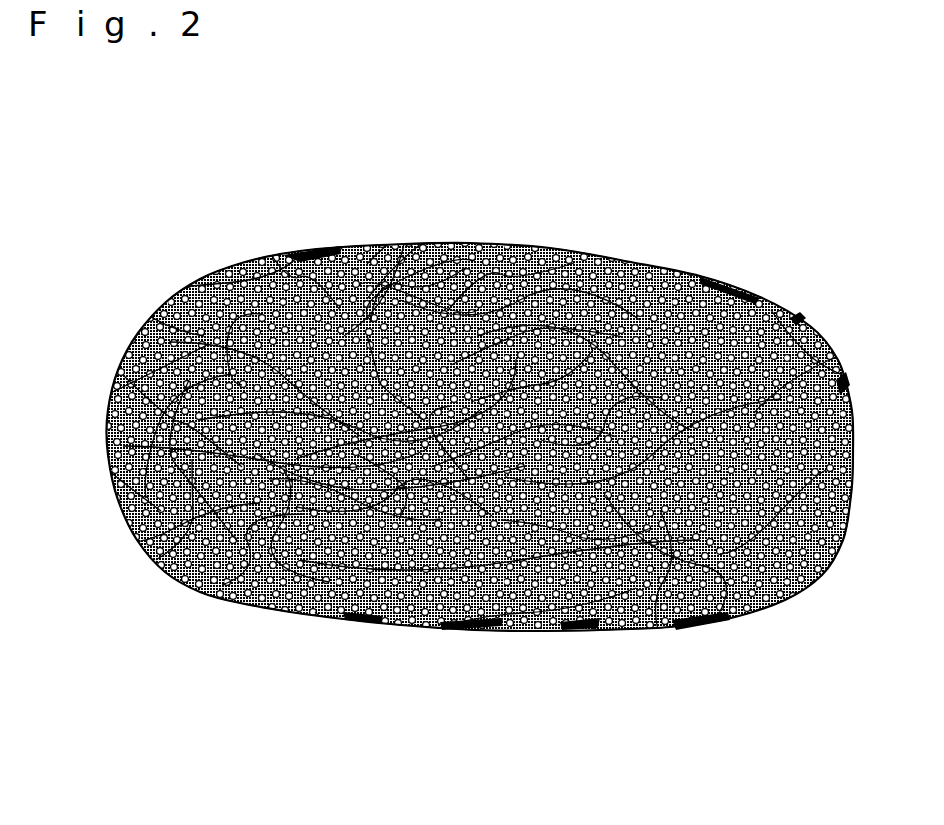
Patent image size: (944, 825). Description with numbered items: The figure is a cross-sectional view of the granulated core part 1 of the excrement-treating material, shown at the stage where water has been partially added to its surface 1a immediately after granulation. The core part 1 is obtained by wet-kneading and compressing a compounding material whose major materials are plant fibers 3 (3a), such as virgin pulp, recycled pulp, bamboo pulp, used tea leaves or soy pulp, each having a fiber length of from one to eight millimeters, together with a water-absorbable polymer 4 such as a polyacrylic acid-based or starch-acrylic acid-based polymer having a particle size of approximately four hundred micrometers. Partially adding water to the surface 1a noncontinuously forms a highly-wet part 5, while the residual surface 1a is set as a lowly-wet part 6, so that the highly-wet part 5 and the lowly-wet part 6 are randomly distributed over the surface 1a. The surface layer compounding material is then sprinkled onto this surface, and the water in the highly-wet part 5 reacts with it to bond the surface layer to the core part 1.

The core part 1 is at (127, 308).
The surface of the core part 1a is at (640, 263).
The plant fibers 3 is at (212, 272).
The plant fibers 3a is at (442, 431).
The water-absorbable polymer 4 is at (323, 251).
The highly-wet part 5 is at (792, 318).
The lowly-wet part 6 is at (413, 631).